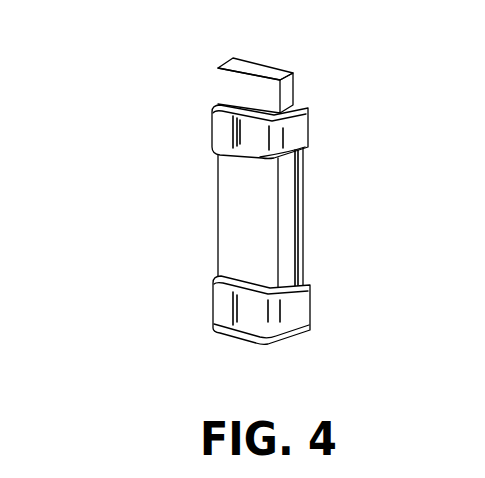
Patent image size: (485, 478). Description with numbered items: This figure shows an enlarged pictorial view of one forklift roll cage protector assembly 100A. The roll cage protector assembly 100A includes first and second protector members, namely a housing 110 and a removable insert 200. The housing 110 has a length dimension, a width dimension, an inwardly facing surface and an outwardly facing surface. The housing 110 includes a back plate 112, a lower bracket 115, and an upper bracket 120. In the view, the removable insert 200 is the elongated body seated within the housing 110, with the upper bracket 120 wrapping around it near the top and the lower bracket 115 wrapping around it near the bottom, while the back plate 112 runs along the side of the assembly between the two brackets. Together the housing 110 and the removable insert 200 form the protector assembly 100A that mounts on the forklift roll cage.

The roll cage protector assembly 100A is at (170, 98).
The upper bracket 120 is at (301, 126).
The removable insert 200 is at (216, 210).
The back plate 112 is at (298, 197).
The housing 110 is at (213, 302).
The lower bracket 115 is at (302, 307).